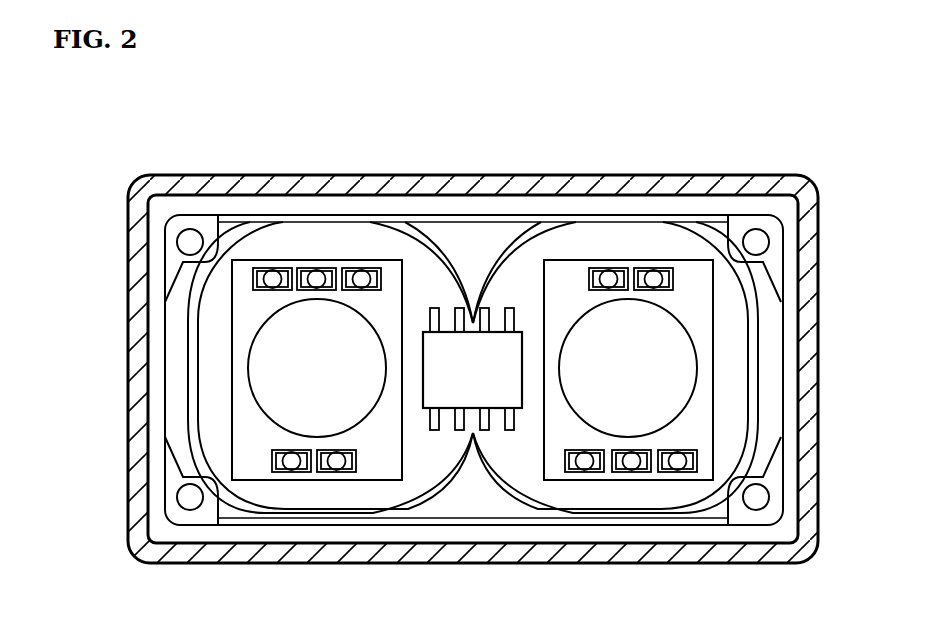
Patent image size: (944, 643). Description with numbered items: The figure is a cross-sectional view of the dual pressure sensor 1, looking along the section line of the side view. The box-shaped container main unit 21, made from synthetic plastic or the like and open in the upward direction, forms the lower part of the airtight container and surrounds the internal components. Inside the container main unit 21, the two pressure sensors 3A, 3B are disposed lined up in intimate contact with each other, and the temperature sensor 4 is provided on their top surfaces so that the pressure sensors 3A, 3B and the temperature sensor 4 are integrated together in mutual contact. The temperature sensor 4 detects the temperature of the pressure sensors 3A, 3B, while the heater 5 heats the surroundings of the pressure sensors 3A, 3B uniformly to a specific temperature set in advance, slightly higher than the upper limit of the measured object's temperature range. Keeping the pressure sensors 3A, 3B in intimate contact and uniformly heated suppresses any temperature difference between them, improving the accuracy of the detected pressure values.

The dual pressure sensor 1 is at (378, 148).
The container main unit 21 is at (811, 292).
The heater 5 is at (573, 224).
The temperature sensor 4 is at (477, 352).
The pressure sensor 3A is at (702, 424).
The pressure sensor 3B is at (254, 434).